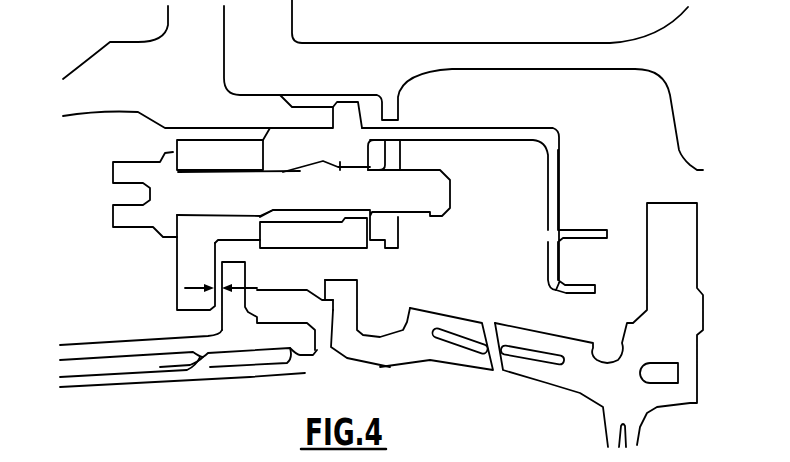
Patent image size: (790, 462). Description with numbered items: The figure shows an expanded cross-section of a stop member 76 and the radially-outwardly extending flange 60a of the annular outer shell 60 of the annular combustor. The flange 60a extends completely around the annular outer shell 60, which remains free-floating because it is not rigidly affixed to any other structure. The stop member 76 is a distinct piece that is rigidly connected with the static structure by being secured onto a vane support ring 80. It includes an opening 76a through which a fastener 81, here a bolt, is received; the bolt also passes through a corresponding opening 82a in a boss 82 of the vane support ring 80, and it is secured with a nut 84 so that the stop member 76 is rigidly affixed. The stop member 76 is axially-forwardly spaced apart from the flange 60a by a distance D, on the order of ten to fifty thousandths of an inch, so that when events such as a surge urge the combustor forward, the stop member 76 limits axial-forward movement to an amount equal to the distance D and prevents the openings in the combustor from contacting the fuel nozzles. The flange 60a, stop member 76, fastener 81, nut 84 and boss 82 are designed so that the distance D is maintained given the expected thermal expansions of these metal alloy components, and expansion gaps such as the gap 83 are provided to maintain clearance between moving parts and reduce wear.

The annular outer shell 60 is at (85, 333).
The radially-outwardly extending flange 60a is at (243, 277).
The stop member 76 is at (168, 275).
The opening 76a is at (201, 215).
The vane support ring 80 is at (458, 124).
The fastener 81 is at (173, 188).
The boss 82 is at (318, 146).
The opening 82a is at (310, 211).
The gap 83 is at (235, 251).
The nut 84 is at (398, 233).
The distance D is at (196, 296).